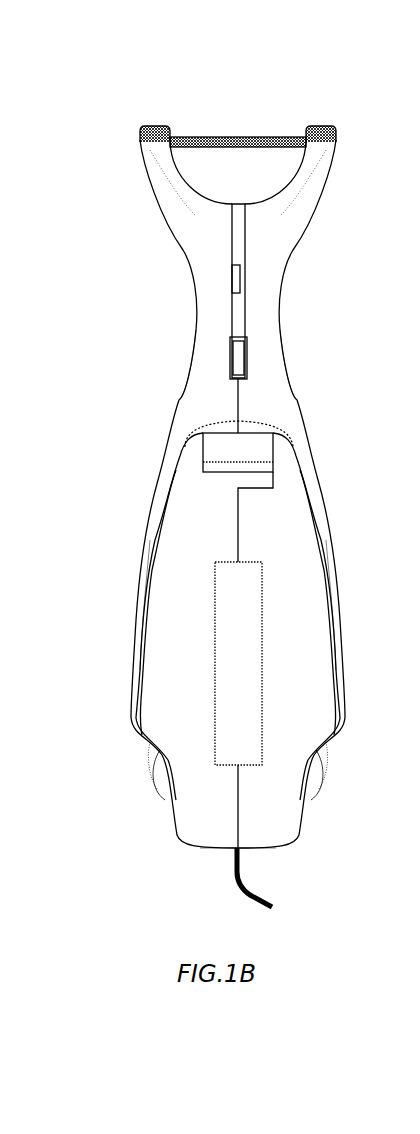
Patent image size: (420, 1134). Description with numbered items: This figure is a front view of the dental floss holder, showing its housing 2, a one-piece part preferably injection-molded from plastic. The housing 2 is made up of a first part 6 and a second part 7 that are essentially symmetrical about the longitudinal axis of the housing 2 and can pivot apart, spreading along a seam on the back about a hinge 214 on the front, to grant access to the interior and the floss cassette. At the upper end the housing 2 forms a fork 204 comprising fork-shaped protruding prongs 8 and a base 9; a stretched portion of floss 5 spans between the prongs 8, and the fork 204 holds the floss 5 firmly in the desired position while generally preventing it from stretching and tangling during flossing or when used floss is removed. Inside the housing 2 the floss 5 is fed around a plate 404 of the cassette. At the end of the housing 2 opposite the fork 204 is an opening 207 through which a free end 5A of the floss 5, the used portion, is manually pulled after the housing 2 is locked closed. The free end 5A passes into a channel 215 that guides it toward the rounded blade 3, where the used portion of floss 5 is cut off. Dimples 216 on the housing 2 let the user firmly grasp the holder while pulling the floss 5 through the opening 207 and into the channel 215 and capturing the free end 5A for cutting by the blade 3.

The housing 2 is at (178, 372).
The rounded blade 3 is at (197, 443).
The floss 5 is at (238, 136).
The free end 5A is at (226, 884).
The first part 6 is at (265, 407).
The second part 7 is at (213, 407).
The fork-shaped protruding prongs 8 is at (142, 142).
The base 9 is at (254, 207).
The fork 204 is at (165, 198).
The opening 207 is at (232, 850).
The hinge 214 is at (257, 583).
The channel 215 is at (153, 508).
The dimples 216 is at (155, 778).
The plate 404 is at (250, 365).